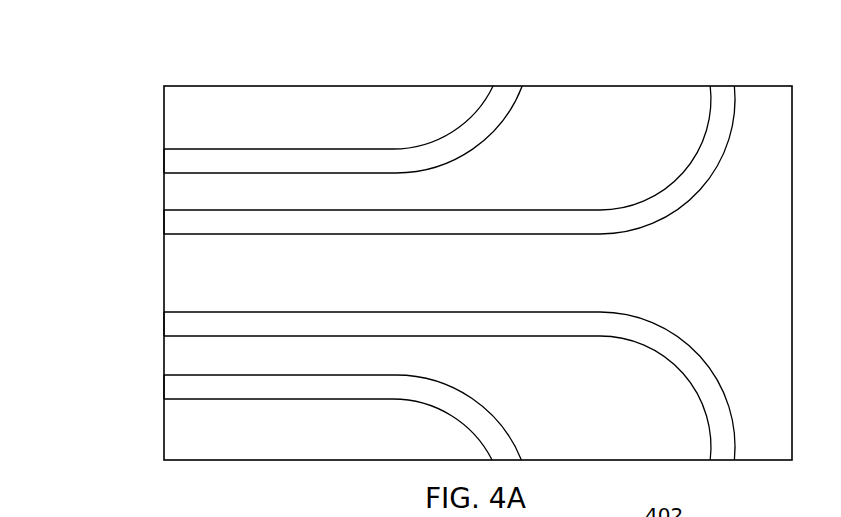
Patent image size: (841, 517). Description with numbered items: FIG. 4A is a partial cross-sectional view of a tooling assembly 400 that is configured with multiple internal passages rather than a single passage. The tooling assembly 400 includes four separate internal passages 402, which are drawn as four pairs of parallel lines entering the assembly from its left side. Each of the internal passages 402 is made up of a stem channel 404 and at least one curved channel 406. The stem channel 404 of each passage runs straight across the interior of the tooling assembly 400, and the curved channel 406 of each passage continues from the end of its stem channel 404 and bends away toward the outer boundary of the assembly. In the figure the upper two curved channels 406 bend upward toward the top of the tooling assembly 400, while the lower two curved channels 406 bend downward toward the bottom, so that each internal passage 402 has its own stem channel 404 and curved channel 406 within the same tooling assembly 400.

The tooling assembly 400 is at (656, 86).
The internal passages 402 is at (109, 252).
The stem channel 404 is at (382, 251).
The curved channel 406 is at (565, 273).